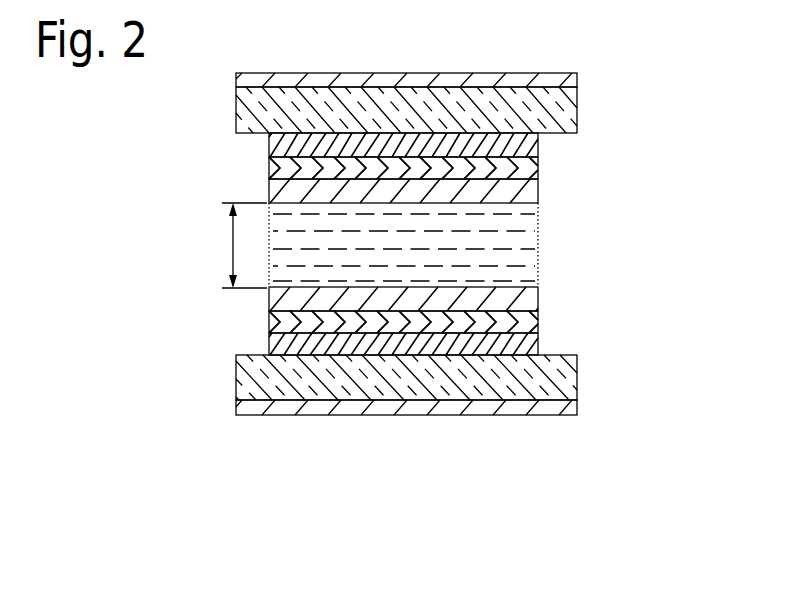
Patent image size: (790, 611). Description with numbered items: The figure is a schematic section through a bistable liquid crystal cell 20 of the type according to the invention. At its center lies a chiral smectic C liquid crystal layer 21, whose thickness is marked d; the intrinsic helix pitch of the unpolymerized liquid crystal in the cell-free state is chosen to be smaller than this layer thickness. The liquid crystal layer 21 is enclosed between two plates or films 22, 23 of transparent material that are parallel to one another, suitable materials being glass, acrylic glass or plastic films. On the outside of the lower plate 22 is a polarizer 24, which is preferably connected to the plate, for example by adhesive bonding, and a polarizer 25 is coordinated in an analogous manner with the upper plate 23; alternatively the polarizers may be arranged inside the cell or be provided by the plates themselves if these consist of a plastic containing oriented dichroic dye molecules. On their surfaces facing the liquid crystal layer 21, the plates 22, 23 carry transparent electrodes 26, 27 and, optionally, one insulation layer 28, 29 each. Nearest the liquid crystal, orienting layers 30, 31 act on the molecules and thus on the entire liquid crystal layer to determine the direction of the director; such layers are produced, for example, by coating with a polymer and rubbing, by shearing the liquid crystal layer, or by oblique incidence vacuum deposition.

The bistable liquid crystal cell 20 is at (247, 434).
The liquid crystal layer 21 is at (532, 253).
The lower plate 22 is at (578, 382).
The upper plate 23 is at (578, 112).
The polarizer 24 is at (578, 408).
The polarizer 25 is at (578, 79).
The transparent electrode 26 is at (540, 344).
The transparent electrode 27 is at (540, 143).
The insulation layer 28 is at (540, 323).
The insulation layer 29 is at (540, 167).
The orientation layer 30 is at (268, 300).
The orientation layer 31 is at (268, 190).